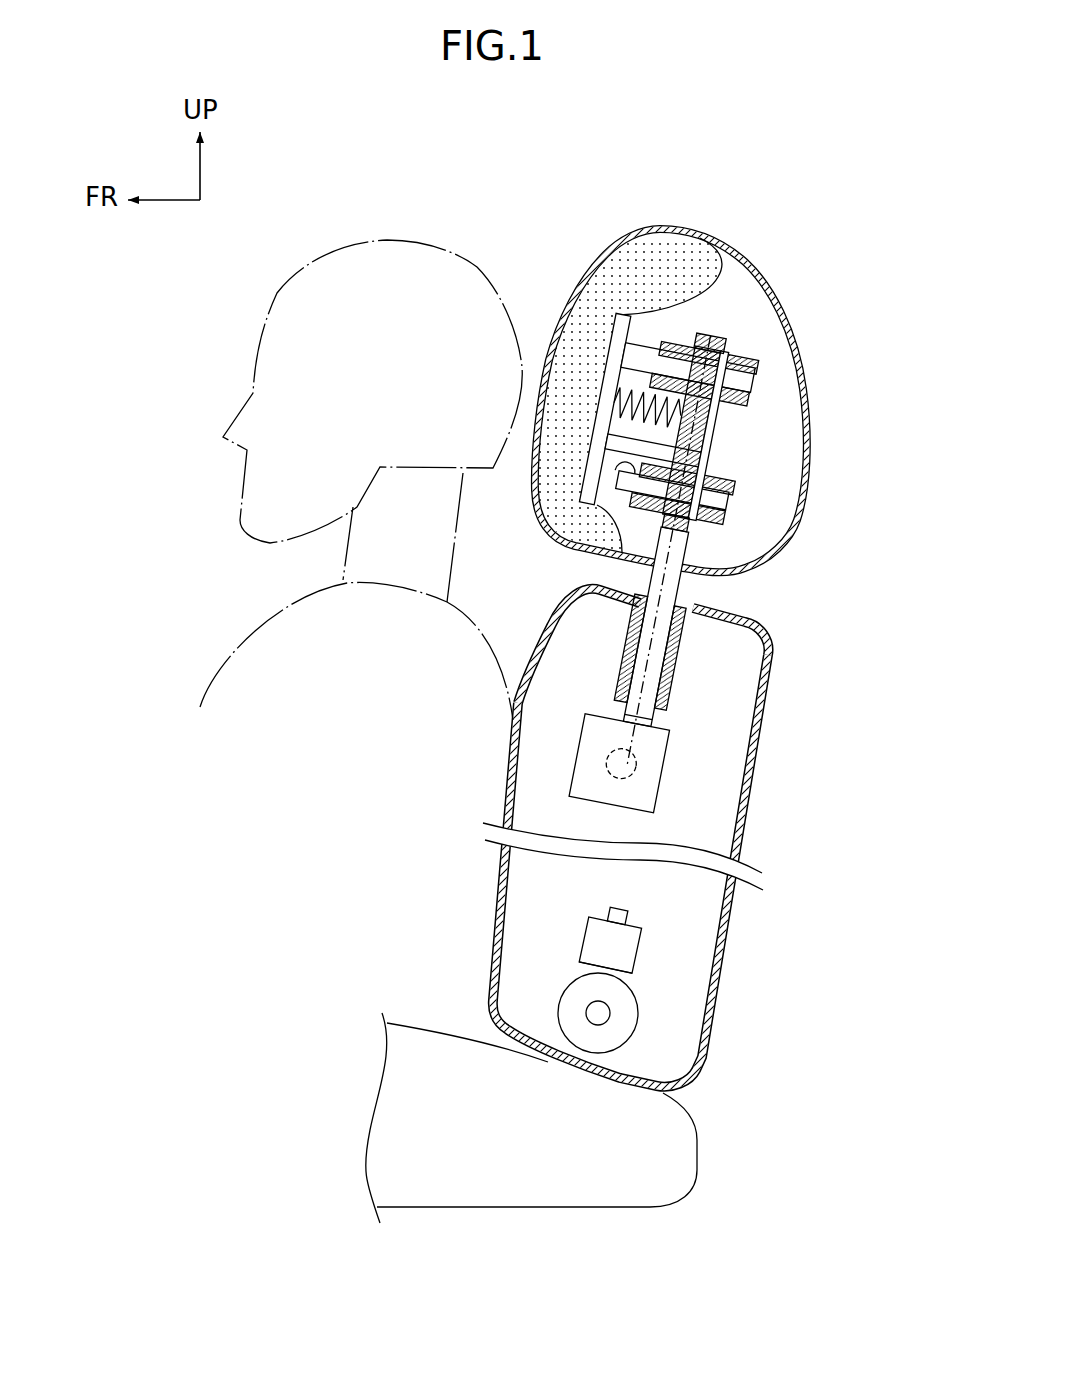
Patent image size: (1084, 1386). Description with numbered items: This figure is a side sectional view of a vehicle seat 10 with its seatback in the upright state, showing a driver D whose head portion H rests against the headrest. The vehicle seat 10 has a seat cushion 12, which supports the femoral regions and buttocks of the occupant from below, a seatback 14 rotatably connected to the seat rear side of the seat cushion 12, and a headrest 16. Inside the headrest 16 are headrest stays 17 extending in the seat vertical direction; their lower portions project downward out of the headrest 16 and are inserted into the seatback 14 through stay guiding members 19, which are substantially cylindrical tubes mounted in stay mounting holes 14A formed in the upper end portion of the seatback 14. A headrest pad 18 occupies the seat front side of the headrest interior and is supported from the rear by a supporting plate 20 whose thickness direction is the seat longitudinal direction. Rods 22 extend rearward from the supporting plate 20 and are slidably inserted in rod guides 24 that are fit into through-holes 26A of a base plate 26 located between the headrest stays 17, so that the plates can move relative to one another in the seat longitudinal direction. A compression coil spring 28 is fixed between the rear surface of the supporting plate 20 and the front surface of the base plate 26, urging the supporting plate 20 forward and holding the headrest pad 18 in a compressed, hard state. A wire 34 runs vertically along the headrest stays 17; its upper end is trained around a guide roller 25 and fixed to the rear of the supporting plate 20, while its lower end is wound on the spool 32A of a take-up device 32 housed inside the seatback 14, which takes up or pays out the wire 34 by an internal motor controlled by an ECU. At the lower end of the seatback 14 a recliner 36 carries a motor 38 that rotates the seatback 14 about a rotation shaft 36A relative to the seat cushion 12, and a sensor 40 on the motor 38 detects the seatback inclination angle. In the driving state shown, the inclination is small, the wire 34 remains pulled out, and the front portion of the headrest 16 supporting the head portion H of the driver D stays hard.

The vehicle seat 10 is at (642, 684).
The seat cushion 12 is at (525, 1210).
The seatback 14 is at (752, 833).
The stay mounting hole 14A is at (693, 625).
The headrest 16 is at (790, 331).
The headrest stay 17 is at (689, 604).
The headrest pad 18 is at (734, 270).
The stay guiding member 19 is at (624, 657).
The supporting plate 20 is at (574, 325).
The rod 22 is at (657, 345).
The rod guide 24 is at (757, 384).
The guide roller 25 is at (706, 449).
The base plate 26 is at (722, 427).
The through-hole 26A is at (722, 340).
The compression coil spring 28 is at (660, 397).
The take-up device 32 is at (580, 736).
The spool 32A is at (607, 779).
The wire 34 is at (648, 716).
The recliner 36 is at (645, 1013).
The rotation shaft 36A is at (607, 1020).
The motor 38 is at (642, 957).
The sensor 40 is at (583, 967).
The head portion H is at (387, 240).
The driver D is at (224, 662).